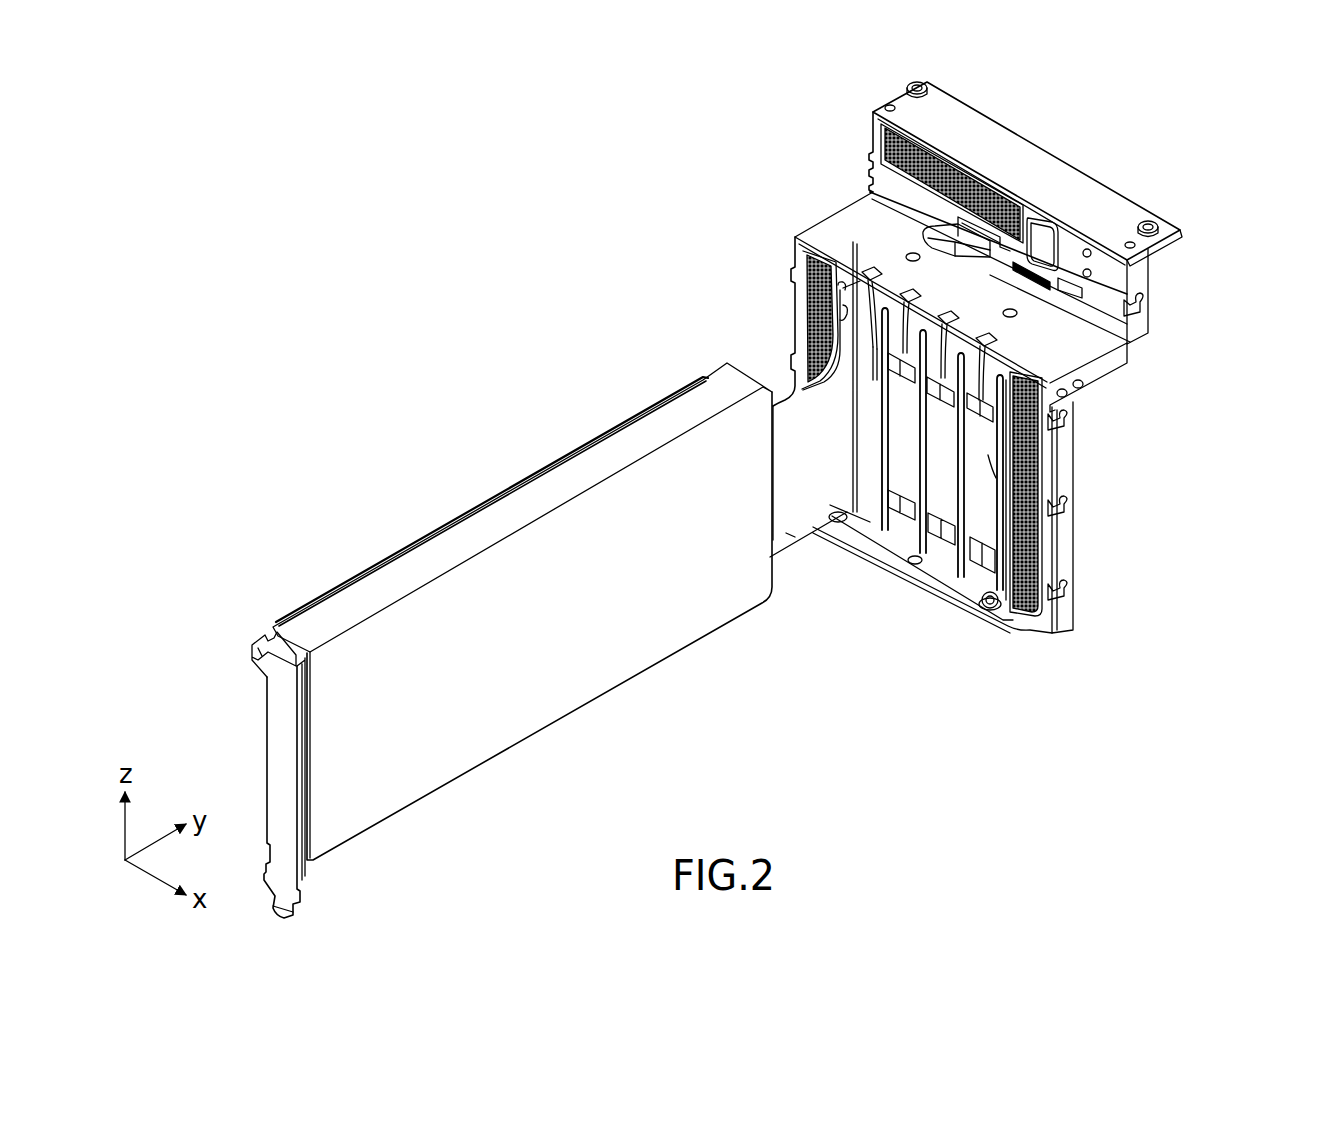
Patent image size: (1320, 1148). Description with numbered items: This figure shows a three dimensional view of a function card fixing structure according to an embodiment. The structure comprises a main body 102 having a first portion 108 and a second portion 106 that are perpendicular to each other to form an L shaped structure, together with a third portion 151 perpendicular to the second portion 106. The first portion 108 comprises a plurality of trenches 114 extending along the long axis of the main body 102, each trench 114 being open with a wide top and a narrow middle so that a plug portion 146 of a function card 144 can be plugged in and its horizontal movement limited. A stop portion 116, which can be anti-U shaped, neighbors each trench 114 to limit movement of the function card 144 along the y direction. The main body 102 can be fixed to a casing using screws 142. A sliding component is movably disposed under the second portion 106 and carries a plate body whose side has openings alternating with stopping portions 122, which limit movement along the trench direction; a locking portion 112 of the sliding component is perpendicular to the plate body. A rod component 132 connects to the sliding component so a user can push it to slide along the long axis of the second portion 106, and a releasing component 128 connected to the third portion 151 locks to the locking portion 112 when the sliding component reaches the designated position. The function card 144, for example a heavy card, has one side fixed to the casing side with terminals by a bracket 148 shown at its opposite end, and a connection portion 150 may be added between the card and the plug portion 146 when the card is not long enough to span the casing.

The main body 102 is at (1005, 363).
The second portion 106 is at (1070, 293).
The first portion 108 is at (1040, 515).
The locking portion 112 is at (1060, 358).
The trench 114 is at (903, 335).
The stop portion 116 is at (990, 467).
The stopping portion 122 is at (795, 362).
The releasing component 128 is at (1037, 237).
The rod component 132 is at (962, 240).
The screw 142 is at (988, 606).
The function card 144 is at (621, 446).
The plug portion 146 is at (820, 316).
The card bracket 148 is at (272, 688).
The connection portion 150 is at (795, 537).
The third portion 151 is at (1117, 308).